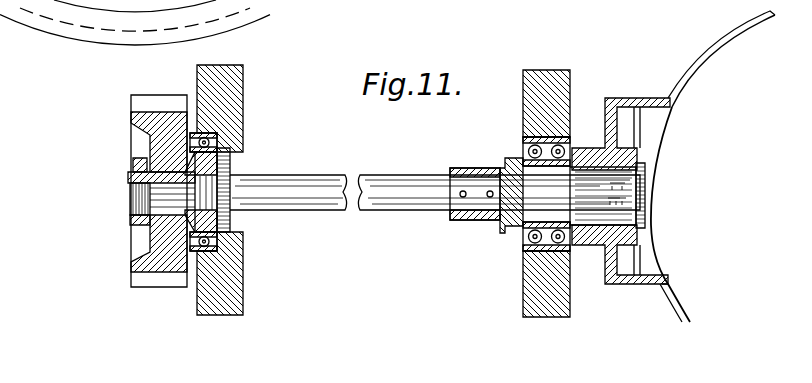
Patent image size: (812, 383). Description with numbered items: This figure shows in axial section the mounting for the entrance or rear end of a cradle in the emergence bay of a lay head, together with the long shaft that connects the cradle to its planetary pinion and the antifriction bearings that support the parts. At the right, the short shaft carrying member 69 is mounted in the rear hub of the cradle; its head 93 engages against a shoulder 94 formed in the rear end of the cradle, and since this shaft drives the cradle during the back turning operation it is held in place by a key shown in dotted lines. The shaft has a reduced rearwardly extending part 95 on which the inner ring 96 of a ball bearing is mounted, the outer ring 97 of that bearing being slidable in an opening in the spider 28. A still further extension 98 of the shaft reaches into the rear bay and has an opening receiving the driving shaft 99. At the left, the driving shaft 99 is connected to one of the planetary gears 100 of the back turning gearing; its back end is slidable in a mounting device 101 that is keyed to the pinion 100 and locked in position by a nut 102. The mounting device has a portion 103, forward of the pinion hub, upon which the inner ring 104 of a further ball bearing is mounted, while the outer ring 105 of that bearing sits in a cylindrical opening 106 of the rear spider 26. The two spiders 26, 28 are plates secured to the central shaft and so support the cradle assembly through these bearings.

The rear spider 26 is at (243, 78).
The spider 28 is at (562, 86).
The shaft carrying member 69 is at (647, 186).
The head 93 is at (652, 173).
The shoulder 94 is at (636, 153).
The reduced rearwardly extending part 95 is at (512, 233).
The inner ring 96 is at (522, 246).
The outer ring 97 is at (523, 138).
The extension 98 is at (466, 170).
The driving shaft 99 is at (404, 206).
The planetary gear 100 is at (152, 277).
The mounting device 101 is at (158, 184).
The nut 102 is at (133, 165).
The portion 103 is at (232, 168).
The inner ring 104 is at (232, 142).
The outer ring 105 is at (222, 238).
The cylindrical opening 106 is at (218, 248).